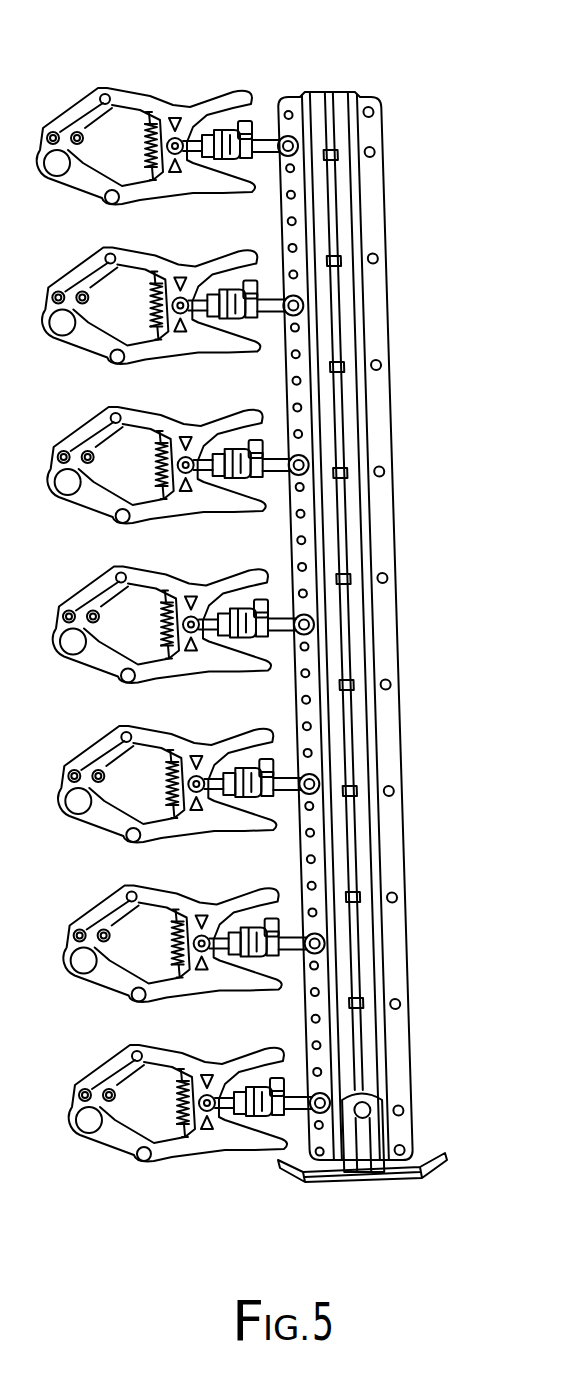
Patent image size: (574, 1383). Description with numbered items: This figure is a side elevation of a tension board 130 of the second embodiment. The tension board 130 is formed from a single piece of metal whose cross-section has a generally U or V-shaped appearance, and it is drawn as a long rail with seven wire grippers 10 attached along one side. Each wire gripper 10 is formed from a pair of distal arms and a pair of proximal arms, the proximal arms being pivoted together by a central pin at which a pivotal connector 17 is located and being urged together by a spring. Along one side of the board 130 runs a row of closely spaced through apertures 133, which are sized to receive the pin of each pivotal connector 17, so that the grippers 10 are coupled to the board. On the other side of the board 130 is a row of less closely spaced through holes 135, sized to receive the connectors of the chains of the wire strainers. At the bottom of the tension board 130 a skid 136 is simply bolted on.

The wire gripper 10 is at (152, 100).
The pivotal connector 17 is at (262, 128).
The tension board 130 is at (352, 96).
The through apertures 133 is at (286, 198).
The through holes 135 is at (382, 367).
The skid 136 is at (310, 1183).